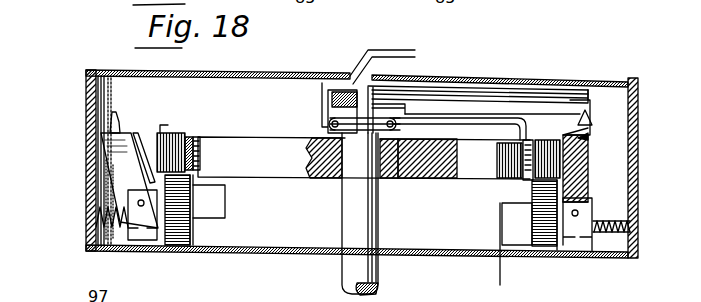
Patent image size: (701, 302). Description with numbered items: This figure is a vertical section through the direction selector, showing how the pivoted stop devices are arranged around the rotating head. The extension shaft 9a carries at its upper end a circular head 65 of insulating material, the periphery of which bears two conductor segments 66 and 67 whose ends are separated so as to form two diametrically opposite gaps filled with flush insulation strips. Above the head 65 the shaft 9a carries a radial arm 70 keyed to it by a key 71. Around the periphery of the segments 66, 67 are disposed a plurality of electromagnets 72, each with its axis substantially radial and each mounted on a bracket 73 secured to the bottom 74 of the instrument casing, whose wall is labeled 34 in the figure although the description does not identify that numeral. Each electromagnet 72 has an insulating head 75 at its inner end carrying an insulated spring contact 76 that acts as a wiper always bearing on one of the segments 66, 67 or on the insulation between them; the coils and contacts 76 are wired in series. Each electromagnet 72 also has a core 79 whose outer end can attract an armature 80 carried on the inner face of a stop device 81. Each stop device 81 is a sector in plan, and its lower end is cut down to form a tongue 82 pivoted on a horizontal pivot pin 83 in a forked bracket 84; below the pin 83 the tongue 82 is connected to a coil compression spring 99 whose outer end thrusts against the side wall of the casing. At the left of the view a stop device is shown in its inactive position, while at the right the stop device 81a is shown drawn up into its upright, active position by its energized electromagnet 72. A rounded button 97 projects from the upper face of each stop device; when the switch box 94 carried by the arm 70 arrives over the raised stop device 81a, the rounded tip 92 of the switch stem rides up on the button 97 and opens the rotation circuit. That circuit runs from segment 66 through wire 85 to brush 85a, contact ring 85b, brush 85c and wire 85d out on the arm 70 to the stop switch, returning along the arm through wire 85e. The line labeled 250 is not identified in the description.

The housing 34 is at (84, 118).
The extension shaft 9a is at (372, 213).
The circular head 65 is at (437, 179).
The conductor segment 66 is at (500, 169).
The conductor segment 67 is at (205, 152).
The radial arm 70 is at (528, 92).
The key 71 is at (405, 110).
The electromagnet 72 is at (172, 133).
The bracket 73 is at (186, 228).
The bottom of the casing 74 is at (466, 256).
The insulating head 75 is at (190, 136).
The insulated spring contact 76 is at (197, 138).
The core 79 is at (165, 133).
The armature 80 is at (609, 160).
The stop device 81 is at (112, 165).
The stop device 81a is at (594, 173).
The tongue 82 is at (145, 185).
The pivot pin 83 is at (137, 203).
The forked bracket 84 is at (148, 244).
The wire 85 is at (437, 130).
The brush 85a is at (400, 179).
The contact ring 85b is at (309, 146).
The brush 85c is at (330, 126).
The wire 85d is at (492, 84).
The wire 85e is at (273, 294).
The rounded tip 92 is at (586, 133).
The switch box 94 is at (596, 120).
The rounded button 97 is at (609, 145).
The coil compression spring 99 is at (108, 250).
The line 250 is at (500, 285).